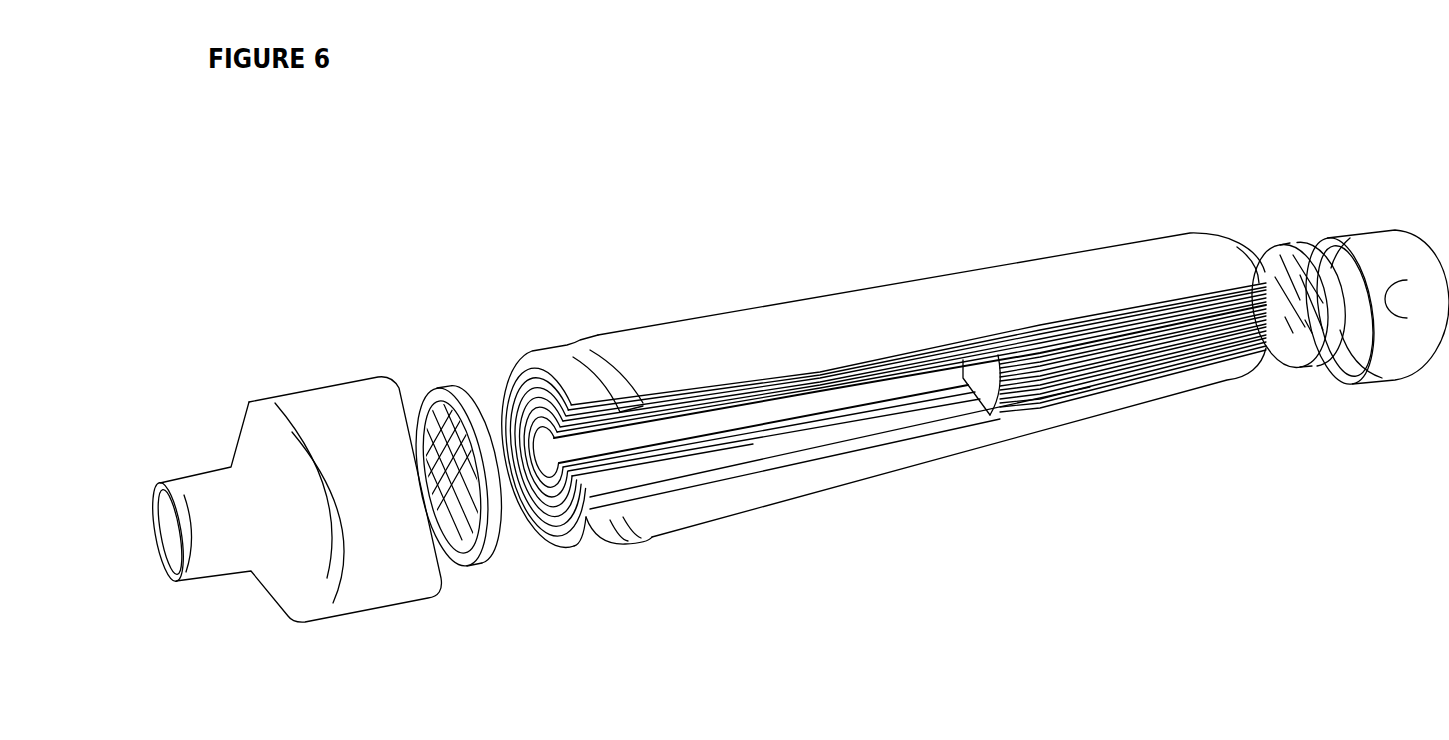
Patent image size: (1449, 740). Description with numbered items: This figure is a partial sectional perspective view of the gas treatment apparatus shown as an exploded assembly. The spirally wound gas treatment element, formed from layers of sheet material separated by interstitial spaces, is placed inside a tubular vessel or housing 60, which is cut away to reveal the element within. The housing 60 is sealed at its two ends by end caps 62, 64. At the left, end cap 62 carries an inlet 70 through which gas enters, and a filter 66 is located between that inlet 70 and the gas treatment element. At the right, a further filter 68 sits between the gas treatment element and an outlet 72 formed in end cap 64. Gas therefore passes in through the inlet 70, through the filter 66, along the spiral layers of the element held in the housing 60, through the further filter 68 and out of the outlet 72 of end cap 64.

The housing 60 is at (770, 330).
The end cap 62 is at (366, 592).
The end cap 64 is at (1400, 251).
The filter 66 is at (490, 551).
The further filter 68 is at (1268, 249).
The inlet 70 is at (165, 548).
The outlet 72 is at (1390, 307).